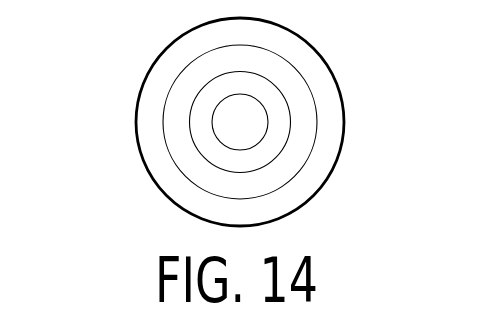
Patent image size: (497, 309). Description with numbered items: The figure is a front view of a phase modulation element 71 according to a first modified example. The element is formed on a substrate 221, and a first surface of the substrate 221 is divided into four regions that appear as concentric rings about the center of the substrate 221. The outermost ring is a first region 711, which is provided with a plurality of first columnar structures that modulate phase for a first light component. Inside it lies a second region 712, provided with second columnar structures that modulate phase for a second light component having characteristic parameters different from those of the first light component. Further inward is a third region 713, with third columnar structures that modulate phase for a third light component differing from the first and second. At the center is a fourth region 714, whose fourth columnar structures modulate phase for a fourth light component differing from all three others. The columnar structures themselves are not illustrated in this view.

The phase modulation element 71 is at (313, 36).
The first region 711 is at (173, 68).
The second region 712 is at (175, 100).
The third region 713 is at (197, 145).
The fourth region 714 is at (235, 143).
The substrate 221 is at (328, 88).